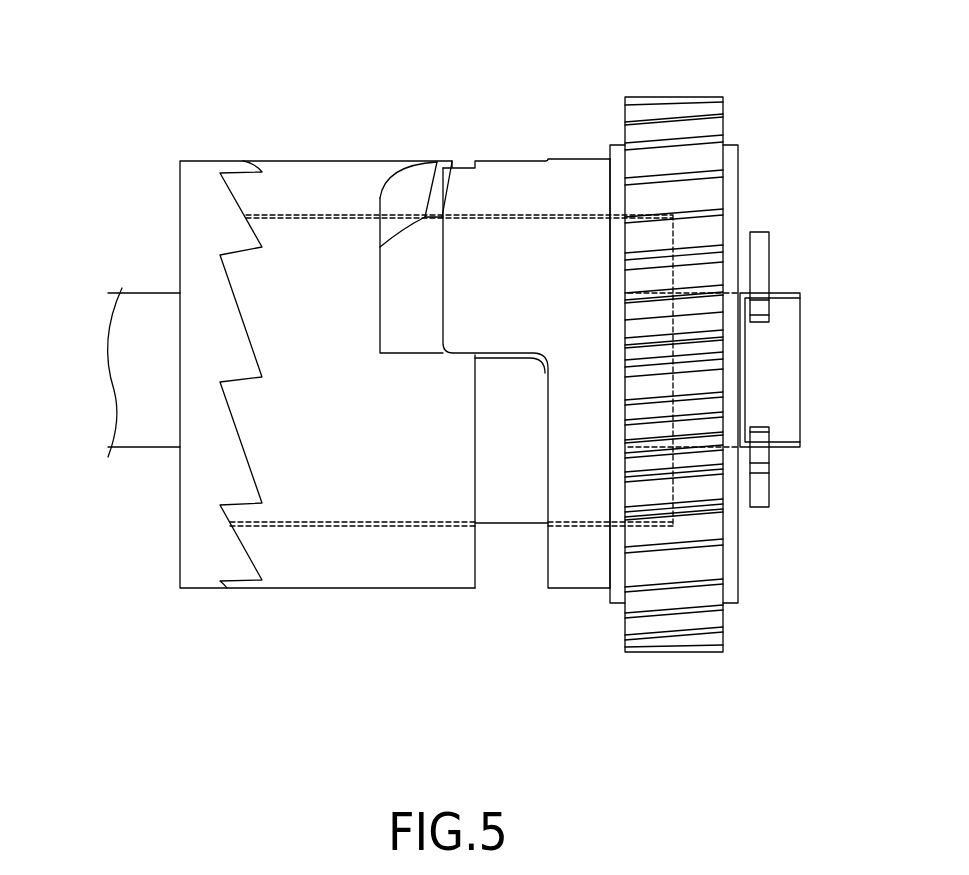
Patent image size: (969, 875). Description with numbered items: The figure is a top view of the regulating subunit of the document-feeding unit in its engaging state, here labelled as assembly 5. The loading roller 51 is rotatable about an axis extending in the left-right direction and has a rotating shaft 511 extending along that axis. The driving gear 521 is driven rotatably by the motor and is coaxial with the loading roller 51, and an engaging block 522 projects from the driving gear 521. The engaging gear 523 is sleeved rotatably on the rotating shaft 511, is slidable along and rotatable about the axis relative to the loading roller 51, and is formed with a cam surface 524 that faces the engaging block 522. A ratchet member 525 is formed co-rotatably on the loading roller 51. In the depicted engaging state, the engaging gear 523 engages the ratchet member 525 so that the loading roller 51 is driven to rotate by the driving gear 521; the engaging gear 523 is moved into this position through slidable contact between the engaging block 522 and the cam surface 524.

The transmission assembly 5 is at (195, 624).
The loading roller 51 is at (147, 302).
The rotating shaft 511 is at (510, 523).
The driving gear 521 is at (647, 97).
The engaging block 522 is at (502, 187).
The engaging gear 523 is at (310, 198).
The cam surface 524 is at (400, 187).
The ratchet member 525 is at (198, 190).